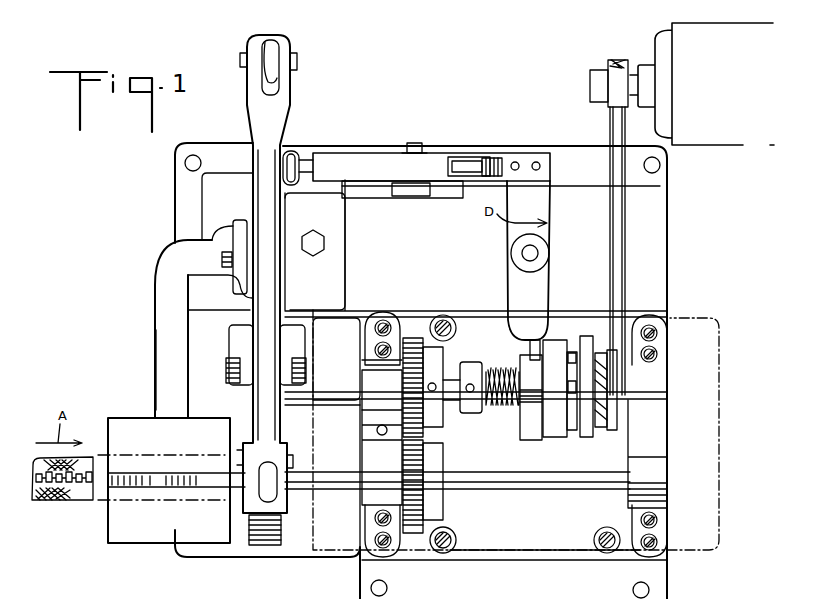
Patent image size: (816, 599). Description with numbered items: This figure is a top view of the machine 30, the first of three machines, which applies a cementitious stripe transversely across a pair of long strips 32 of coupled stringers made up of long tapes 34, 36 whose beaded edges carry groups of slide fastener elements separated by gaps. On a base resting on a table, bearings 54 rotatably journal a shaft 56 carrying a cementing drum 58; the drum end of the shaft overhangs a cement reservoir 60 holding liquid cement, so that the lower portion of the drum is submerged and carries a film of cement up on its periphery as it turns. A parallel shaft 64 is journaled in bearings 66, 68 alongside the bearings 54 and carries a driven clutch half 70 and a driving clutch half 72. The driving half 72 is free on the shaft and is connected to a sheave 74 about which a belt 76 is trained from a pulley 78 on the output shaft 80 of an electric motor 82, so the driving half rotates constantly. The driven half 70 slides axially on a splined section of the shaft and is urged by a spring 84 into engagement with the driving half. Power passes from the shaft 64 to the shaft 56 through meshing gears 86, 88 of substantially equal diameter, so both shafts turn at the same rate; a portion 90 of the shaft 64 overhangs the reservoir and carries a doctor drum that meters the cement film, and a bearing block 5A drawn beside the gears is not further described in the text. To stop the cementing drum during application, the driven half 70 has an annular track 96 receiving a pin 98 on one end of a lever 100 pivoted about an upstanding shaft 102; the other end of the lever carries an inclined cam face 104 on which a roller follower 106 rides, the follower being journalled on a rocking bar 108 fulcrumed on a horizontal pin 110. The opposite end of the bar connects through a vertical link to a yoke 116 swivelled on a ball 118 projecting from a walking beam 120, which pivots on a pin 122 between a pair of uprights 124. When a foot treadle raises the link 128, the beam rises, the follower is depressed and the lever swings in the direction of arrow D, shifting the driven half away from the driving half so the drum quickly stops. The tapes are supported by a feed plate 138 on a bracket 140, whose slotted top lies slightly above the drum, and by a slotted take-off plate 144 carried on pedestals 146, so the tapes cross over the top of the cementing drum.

The machine 30 is at (147, 283).
The pair of long strips 32 is at (80, 498).
The long tape 34 is at (42, 500).
The long tape 36 is at (40, 460).
The bearings 54 is at (664, 484).
The shaft 56 is at (560, 484).
The cementing drum 58 is at (262, 545).
The cement reservoir 60 is at (304, 558).
The shaft 64 is at (456, 372).
The bearing 66 is at (368, 368).
The bearing 68 is at (660, 406).
The driven clutch half 70 is at (556, 437).
The driving clutch half 72 is at (590, 437).
The sheave 74 is at (630, 392).
The belt 76 is at (622, 282).
The pulley 78 is at (612, 64).
The output shaft 80 is at (590, 92).
The electric motor 82 is at (752, 132).
The spring 84 is at (500, 407).
The gear 86 is at (410, 340).
The gear 88 is at (414, 533).
The portion of shaft 90 is at (347, 402).
The annular track 96 is at (528, 428).
The pin 98 is at (542, 350).
The lever 100 is at (509, 290).
The upstanding shaft 102 is at (538, 253).
The cam face 104 is at (492, 156).
The roller follower 106 is at (460, 158).
The rocking bar 108 is at (430, 154).
The horizontal pin 110 is at (414, 142).
The yoke 116 is at (292, 150).
The ball 118 is at (308, 160).
The walking beam 120 is at (252, 128).
The pin 122 is at (228, 357).
The uprights 124 is at (240, 384).
The link 128 is at (272, 44).
The feed plate 138 is at (138, 540).
The bracket 140 is at (160, 371).
The take-off plate 144 is at (722, 335).
The pedestals 146 is at (452, 536).
The bearing block 5A is at (364, 462).